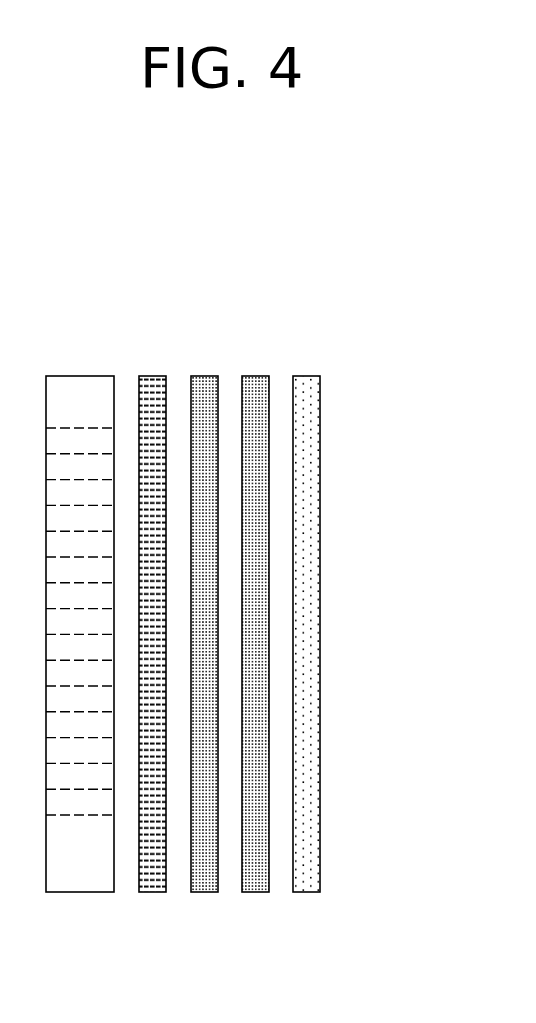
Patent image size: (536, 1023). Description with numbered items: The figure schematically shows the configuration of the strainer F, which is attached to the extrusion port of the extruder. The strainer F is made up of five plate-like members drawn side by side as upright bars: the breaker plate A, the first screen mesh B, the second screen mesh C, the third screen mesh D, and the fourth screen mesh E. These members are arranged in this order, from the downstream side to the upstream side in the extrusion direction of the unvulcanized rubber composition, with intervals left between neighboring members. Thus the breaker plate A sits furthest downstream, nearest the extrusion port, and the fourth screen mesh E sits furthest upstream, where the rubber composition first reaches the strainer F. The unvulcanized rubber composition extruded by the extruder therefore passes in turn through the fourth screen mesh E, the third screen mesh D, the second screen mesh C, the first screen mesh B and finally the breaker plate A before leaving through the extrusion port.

The breaker plate A is at (80, 893).
The screen mesh 1 B is at (152, 893).
The screen mesh 2 C is at (205, 893).
The screen mesh 3 D is at (255, 893).
The screen mesh 4 E is at (307, 893).
The strainer F is at (342, 358).